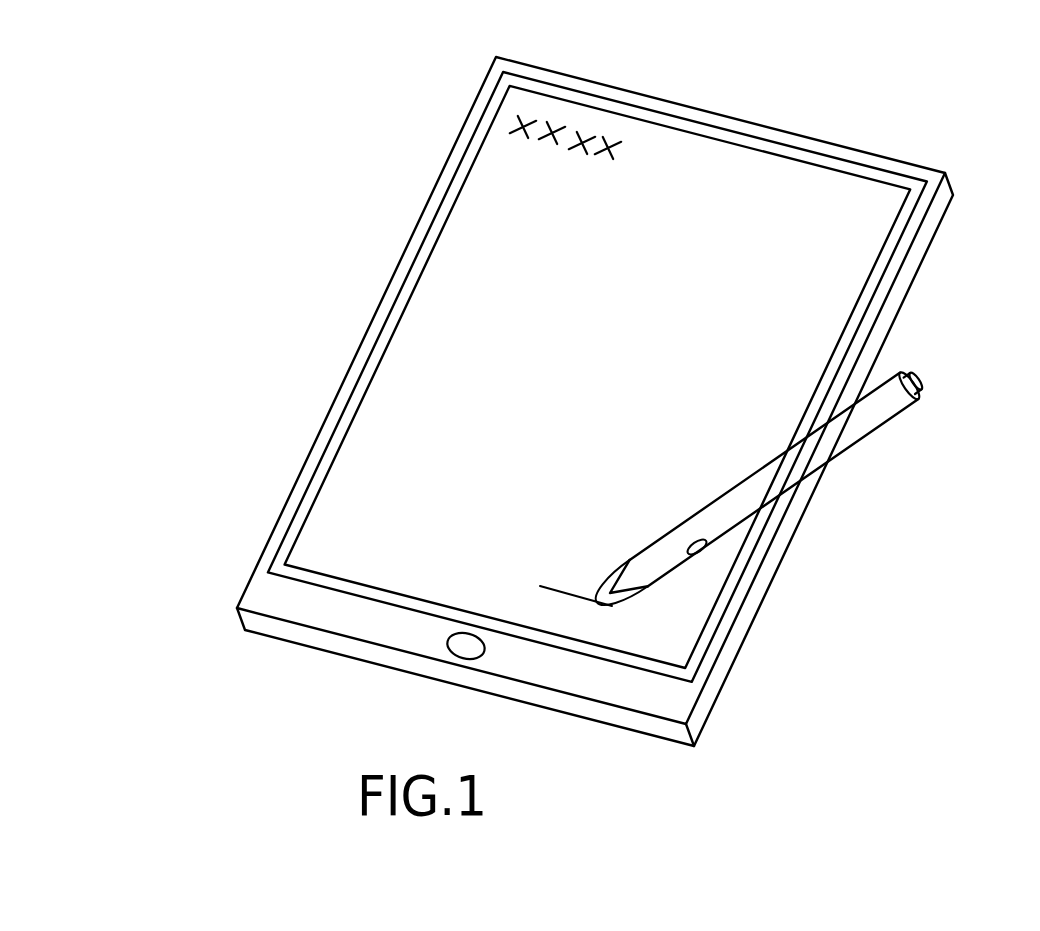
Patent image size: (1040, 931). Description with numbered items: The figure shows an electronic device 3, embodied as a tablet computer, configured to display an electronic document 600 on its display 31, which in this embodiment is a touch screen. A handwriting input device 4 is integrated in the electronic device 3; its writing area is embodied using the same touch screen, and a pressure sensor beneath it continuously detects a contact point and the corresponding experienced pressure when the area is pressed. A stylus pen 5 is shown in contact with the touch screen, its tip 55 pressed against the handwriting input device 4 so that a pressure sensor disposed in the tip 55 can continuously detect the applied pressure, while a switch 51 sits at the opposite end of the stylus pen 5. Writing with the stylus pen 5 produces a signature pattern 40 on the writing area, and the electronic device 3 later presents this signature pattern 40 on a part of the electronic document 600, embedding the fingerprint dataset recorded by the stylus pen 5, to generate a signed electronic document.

The electronic device 3 is at (373, 338).
The display 31 is at (358, 377).
The handwriting input device 4 is at (832, 313).
The electronic document 600 is at (738, 185).
The signature pattern 40 is at (580, 593).
The stylus pen 5 is at (855, 430).
The tip 55 is at (632, 594).
The switch 51 is at (923, 378).